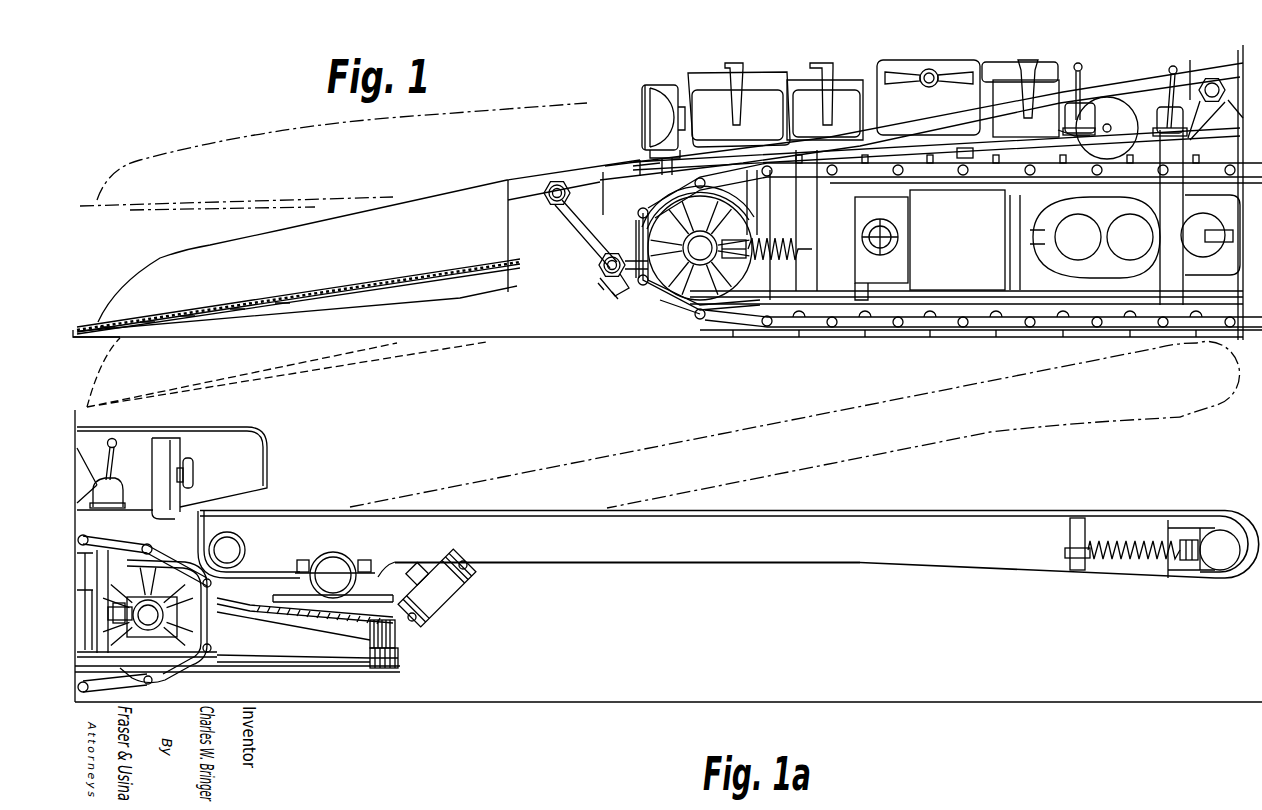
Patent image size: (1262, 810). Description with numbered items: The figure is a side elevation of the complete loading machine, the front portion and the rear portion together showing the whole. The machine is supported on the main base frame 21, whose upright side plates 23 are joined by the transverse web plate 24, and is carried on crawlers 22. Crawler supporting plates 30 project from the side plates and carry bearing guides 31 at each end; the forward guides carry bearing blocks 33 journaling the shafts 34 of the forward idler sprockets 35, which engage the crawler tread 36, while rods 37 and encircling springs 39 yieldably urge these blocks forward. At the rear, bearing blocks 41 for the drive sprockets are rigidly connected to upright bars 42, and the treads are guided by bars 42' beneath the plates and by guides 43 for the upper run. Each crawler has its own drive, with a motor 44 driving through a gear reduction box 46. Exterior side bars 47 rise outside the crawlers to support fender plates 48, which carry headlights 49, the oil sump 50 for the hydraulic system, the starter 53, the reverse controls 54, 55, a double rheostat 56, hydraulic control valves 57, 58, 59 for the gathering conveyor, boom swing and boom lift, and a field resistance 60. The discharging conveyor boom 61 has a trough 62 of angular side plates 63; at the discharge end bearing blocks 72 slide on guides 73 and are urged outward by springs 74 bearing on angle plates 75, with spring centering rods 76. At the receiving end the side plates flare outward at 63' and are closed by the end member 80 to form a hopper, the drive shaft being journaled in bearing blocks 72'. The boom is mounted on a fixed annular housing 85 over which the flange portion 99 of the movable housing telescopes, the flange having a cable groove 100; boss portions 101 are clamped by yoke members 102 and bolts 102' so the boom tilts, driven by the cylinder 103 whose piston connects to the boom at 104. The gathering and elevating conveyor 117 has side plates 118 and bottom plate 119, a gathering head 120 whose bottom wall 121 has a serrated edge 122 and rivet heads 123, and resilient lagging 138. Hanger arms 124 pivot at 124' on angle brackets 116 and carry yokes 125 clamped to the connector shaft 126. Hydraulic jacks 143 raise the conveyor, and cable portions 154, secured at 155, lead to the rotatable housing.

In FIG. 1A, the main base frame 21 is at (333, 673).
In FIG. 1A, the crawlers 22 is at (180, 674).
In FIG. 1A, the upright side plates 23 is at (293, 635).
In FIG. 1A, the transverse web plate 24 is at (286, 673).
In FIG. 1, the crawler supporting plates 30 is at (848, 328).
In FIG. 1, the bearing guides 31 is at (790, 306).
In FIG. 1A, the bearing guides 31 is at (130, 652).
In FIG. 1, the bearing blocks 33 is at (692, 266).
In FIG. 1, the idler sprocket shafts 34 is at (668, 302).
In FIG. 1, the forward idler sprockets 35 is at (640, 288).
In FIG. 1, the crawler tread 36 is at (656, 200).
In FIG. 1, the rods 37 is at (847, 262).
In FIG. 1, the springs 39 is at (797, 247).
In FIG. 1A, the bearing blocks 41 is at (170, 627).
In FIG. 1A, the upright bars 42 is at (142, 594).
In FIG. 1, the guide bars 42' is at (955, 264).
In FIG. 1, the tread guides 43 is at (967, 178).
In FIG. 1, the crawler motor 44 is at (977, 240).
In FIG. 1, the gear reduction box 46 is at (1136, 236).
In FIG. 1, the exterior side bars 47 is at (856, 230).
In FIG. 1, the fender plates 48 is at (920, 138).
In FIG. 1, the headlights 49 is at (660, 85).
In FIG. 1, the oil sump 50 is at (777, 73).
In FIG. 1, the starter 53 is at (718, 73).
In FIG. 1, the reverse control 54 is at (843, 90).
In FIG. 1, the reverse control 55 is at (1012, 63).
In FIG. 1, the double rheostat 56 is at (910, 62).
In FIG. 1, the hydraulic control valve 57 is at (1086, 103).
In FIG. 1, the hydraulic control valve 58 is at (1172, 66).
In FIG. 1A, the hydraulic control valve 59 is at (117, 483).
In FIG. 1A, the field resistance 60 is at (170, 458).
In FIG. 1A, the discharging conveyor boom 61 is at (722, 565).
In FIG. 1A, the trough 62 is at (832, 563).
In FIG. 1A, the angular side plates 63 is at (1059, 552).
In FIG. 1A, the outwardly flared side plate portions 63' is at (712, 499).
In FIG. 1A, the bearing blocks 72 is at (1220, 566).
In FIG. 1A, the anti-friction bearing blocks 72' is at (236, 541).
In FIG. 1A, the guides 73 is at (1178, 530).
In FIG. 1A, the springs 74 is at (1128, 562).
In FIG. 1A, the angle plates 75 is at (1077, 572).
In FIG. 1A, the spring centering rods 76 is at (1066, 557).
In FIG. 1A, the transverse end closing member portion 80 is at (196, 523).
In FIG. 1A, the annular housing member 85 is at (398, 655).
In FIG. 1A, the depending annular flange portion 99 is at (395, 630).
In FIG. 1A, the cable groove 100 is at (262, 612).
In FIG. 1A, the boss portions 101 is at (338, 553).
In FIG. 1A, the yoke members 102 is at (333, 558).
In FIG. 1A, the bolts 102' is at (339, 556).
In FIG. 1A, the cylinder 103 is at (462, 604).
In FIG. 1A, the piston pivotal connection 104 is at (468, 568).
In FIG. 1, the angle brackets 116 is at (598, 180).
In FIG. 1, the gathering and elevating conveyor 117 is at (455, 190).
In FIG. 1, the side plates 118 is at (523, 212).
In FIG. 1, the transverse bottom plate 119 is at (418, 292).
In FIG. 1, the gathering head 120 is at (158, 264).
In FIG. 1, the bottom wall 121 is at (242, 300).
In FIG. 1, the serrated forward edge 122 is at (82, 338).
In FIG. 1, the rivet heads 123 is at (232, 311).
In FIG. 1, the hanger arms 124 is at (890, 178).
In FIG. 1A, the hanger arms 124 is at (91, 470).
In FIG. 1, the hanger arm pivot 124' is at (543, 174).
In FIG. 1, the yokes 125 is at (600, 277).
In FIG. 1, the transverse connector shaft 126 is at (615, 292).
In FIG. 1, the resilient lagging material 138 is at (335, 288).
In FIG. 1, the hydraulic jacks 143 is at (745, 153).
In FIG. 1, the cable end portions 154 is at (1058, 134).
In FIG. 1, the cable end securement 155 is at (962, 172).